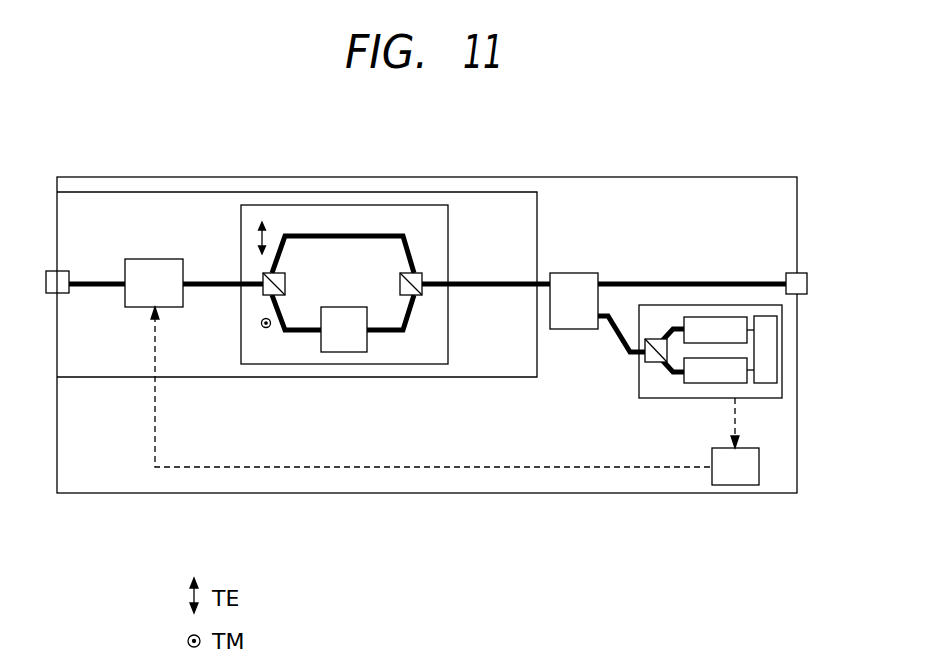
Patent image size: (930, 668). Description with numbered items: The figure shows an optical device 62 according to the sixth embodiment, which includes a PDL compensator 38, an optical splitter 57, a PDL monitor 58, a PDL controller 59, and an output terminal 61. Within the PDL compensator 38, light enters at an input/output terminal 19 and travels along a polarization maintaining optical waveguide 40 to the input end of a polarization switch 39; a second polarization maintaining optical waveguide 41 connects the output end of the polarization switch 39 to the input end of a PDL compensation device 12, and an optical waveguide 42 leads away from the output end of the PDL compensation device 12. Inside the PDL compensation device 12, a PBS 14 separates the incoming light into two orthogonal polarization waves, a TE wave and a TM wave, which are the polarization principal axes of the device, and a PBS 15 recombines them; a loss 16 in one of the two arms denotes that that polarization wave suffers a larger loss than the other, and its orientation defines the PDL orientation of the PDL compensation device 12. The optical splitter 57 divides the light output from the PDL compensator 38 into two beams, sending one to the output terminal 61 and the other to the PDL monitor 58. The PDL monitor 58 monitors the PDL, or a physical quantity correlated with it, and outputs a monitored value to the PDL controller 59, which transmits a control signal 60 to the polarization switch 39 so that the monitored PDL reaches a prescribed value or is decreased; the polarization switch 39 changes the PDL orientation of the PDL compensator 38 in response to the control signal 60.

The PDL compensation device 12 is at (449, 353).
The PBS 14 is at (287, 281).
The PBS 15 is at (400, 288).
The loss 16 is at (328, 353).
The input/output terminal 19 is at (47, 272).
The PDL compensator 38 is at (97, 378).
The polarization switch 39 is at (170, 259).
The polarization maintaining optical waveguide 40 is at (90, 290).
The polarization maintaining optical waveguide 41 is at (212, 290).
The optical waveguide 42 is at (490, 278).
The optical splitter 57 is at (585, 273).
The PDL monitor 58 is at (667, 399).
The PDL controller 59 is at (718, 486).
The control signal 60 is at (550, 466).
The output terminal 61 is at (800, 273).
The optical device 62 is at (148, 494).